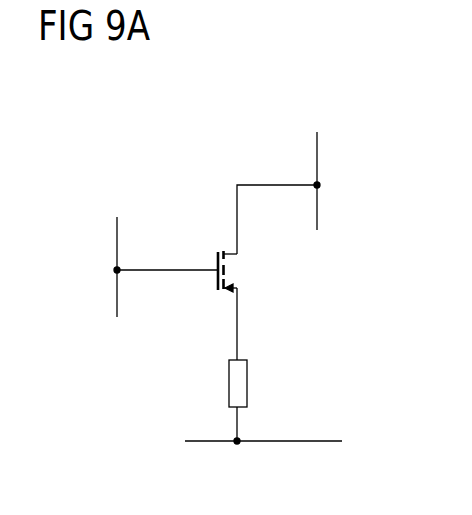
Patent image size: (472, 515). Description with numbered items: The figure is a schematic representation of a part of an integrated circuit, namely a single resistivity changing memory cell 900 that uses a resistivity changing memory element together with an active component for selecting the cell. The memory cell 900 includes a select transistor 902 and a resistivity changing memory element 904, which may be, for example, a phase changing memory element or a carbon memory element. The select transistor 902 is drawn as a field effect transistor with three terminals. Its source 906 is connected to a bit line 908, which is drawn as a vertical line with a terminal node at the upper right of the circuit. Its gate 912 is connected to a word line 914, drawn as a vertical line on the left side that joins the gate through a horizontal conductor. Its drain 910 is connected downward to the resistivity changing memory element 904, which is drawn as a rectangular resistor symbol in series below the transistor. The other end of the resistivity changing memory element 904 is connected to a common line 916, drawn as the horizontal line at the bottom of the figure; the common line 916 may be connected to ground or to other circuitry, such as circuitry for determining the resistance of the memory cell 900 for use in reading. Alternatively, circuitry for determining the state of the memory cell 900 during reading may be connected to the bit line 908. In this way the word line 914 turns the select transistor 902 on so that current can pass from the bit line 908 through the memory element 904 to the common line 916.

The memory cell 900 is at (128, 161).
The select transistor 902 is at (228, 271).
The resistivity changing memory element 904 is at (229, 380).
The source 906 is at (228, 250).
The bit line 908 is at (320, 157).
The drain 910 is at (228, 292).
The gate 912 is at (217, 268).
The word line 914 is at (113, 250).
The common line 916 is at (298, 440).